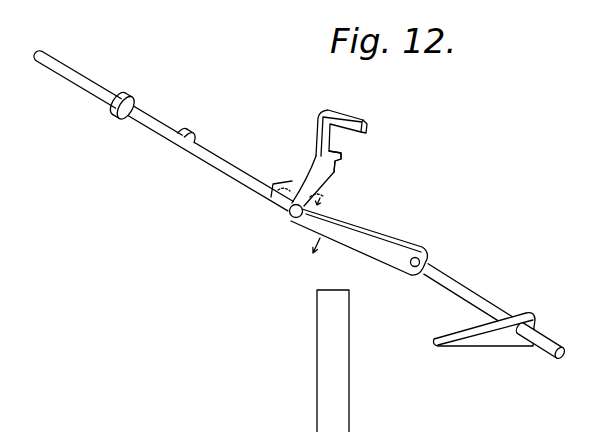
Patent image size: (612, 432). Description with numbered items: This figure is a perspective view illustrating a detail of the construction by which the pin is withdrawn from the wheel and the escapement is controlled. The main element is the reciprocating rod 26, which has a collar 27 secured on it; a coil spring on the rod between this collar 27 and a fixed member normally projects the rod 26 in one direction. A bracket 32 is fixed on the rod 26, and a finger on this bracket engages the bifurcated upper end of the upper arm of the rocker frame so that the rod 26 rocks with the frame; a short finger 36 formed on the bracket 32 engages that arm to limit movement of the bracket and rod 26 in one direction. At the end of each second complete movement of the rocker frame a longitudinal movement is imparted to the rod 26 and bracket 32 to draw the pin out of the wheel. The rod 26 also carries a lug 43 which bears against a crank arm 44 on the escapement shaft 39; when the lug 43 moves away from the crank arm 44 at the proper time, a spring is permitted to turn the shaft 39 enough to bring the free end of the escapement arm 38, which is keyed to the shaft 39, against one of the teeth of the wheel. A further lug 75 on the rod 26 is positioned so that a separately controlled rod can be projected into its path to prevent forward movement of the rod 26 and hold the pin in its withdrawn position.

The rod 26 is at (230, 177).
The collar 27 is at (128, 99).
The lug 75 is at (197, 133).
The bracket 32 is at (348, 113).
The short finger 36 is at (342, 160).
The lug 43 is at (319, 199).
The crank arm 44 is at (358, 235).
The shaft 39 is at (463, 292).
The escapement arm 38 is at (500, 340).